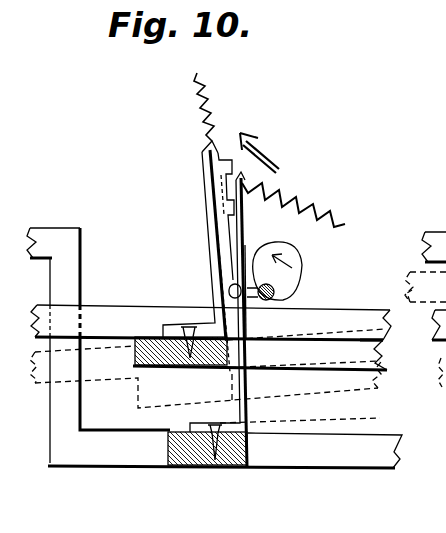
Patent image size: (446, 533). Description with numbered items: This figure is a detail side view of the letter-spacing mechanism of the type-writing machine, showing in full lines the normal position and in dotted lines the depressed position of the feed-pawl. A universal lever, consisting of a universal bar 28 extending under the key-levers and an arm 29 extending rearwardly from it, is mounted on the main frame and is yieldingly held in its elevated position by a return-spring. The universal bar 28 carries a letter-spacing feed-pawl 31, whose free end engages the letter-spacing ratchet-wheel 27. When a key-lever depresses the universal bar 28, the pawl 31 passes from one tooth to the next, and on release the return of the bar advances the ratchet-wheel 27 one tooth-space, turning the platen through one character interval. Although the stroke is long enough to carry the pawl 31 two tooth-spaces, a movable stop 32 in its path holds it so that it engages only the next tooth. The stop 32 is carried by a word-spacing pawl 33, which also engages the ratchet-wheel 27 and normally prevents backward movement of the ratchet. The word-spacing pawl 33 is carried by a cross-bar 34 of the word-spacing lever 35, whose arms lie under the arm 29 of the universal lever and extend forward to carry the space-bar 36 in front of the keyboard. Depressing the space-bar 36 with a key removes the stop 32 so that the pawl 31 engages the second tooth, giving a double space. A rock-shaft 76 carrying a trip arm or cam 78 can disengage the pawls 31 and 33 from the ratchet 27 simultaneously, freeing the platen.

The letter-spacing ratchet-wheel 27 is at (208, 116).
The letter-spacing feed-pawl 31 is at (205, 176).
The word-spacing pawl 33 is at (222, 209).
The movable stop 32 is at (250, 225).
The trip arm or cam 78 is at (302, 265).
The rock-shaft 76 is at (283, 289).
The universal bar 28 is at (152, 337).
The arm 29 is at (343, 370).
The cross-bar 34 is at (193, 457).
The word-spacing lever 35 is at (132, 456).
The space-bar 36 is at (43, 233).